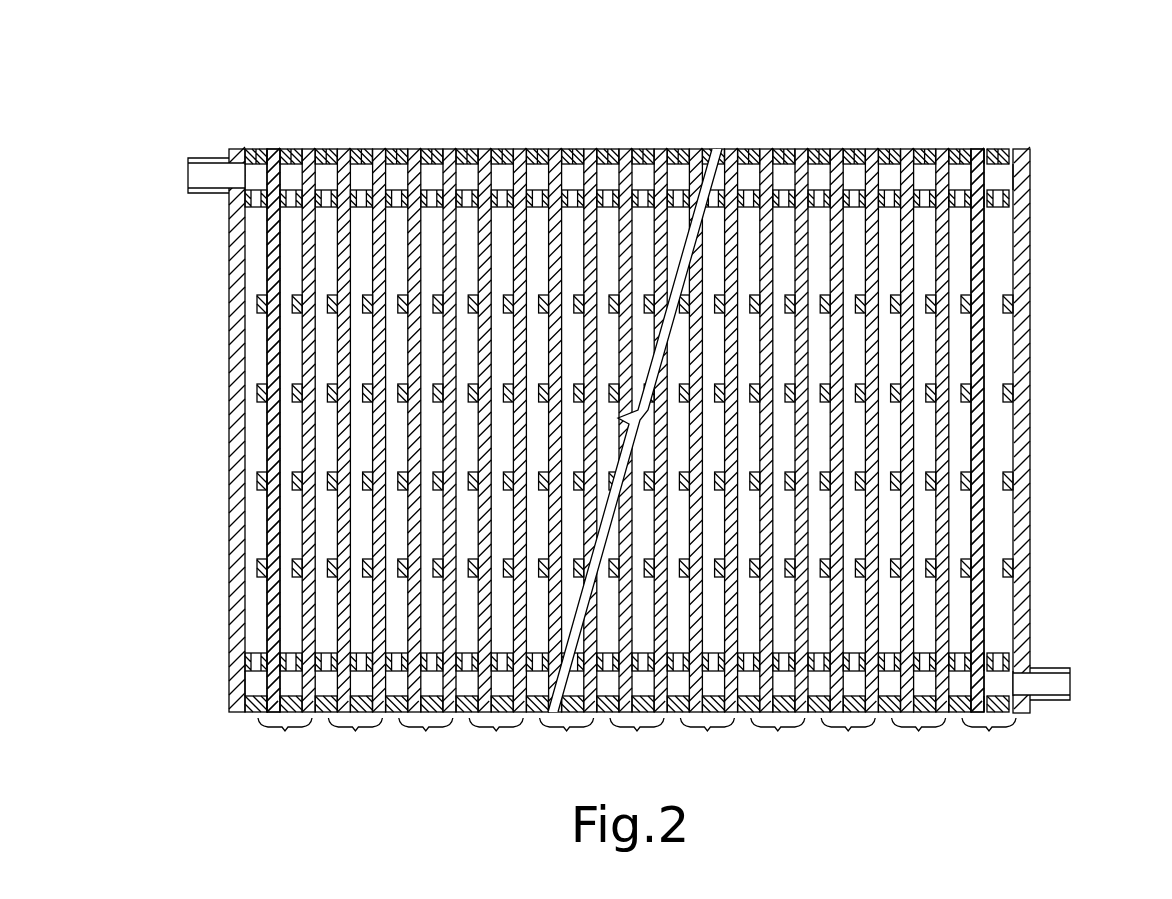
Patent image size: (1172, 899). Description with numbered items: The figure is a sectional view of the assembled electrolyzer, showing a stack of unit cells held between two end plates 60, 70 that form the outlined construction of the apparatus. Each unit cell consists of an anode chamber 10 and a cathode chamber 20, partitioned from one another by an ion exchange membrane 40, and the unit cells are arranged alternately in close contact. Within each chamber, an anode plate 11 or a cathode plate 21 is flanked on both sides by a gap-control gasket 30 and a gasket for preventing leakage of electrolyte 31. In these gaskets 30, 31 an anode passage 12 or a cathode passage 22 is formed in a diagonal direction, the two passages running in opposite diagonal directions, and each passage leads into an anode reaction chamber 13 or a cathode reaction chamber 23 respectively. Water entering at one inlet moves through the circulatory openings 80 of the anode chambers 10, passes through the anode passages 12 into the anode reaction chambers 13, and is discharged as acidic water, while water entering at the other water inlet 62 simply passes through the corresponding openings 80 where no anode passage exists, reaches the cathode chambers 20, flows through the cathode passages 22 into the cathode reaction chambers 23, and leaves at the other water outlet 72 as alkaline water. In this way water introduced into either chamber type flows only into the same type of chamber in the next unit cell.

The anode chamber 10 is at (637, 739).
The cathode chamber 20 is at (636, 739).
The anode plate 11 is at (274, 148).
The cathode plate 21 is at (344, 148).
The ion exchange membrane 40 is at (309, 148).
The gap-control gasket 30 is at (256, 148).
The gasket for preventing leakage of electrolyte 31 is at (291, 148).
The circulatory opening 80 is at (243, 163).
The water inlet 62 is at (194, 160).
The water outlet 72 is at (1068, 667).
The end plate 60 is at (232, 377).
The end plate 70 is at (1032, 385).
The anode reaction chamber 13 is at (282, 326).
The cathode reaction chamber 23 is at (354, 586).
The anode passage 12 is at (250, 656).
The cathode passage 22 is at (940, 646).